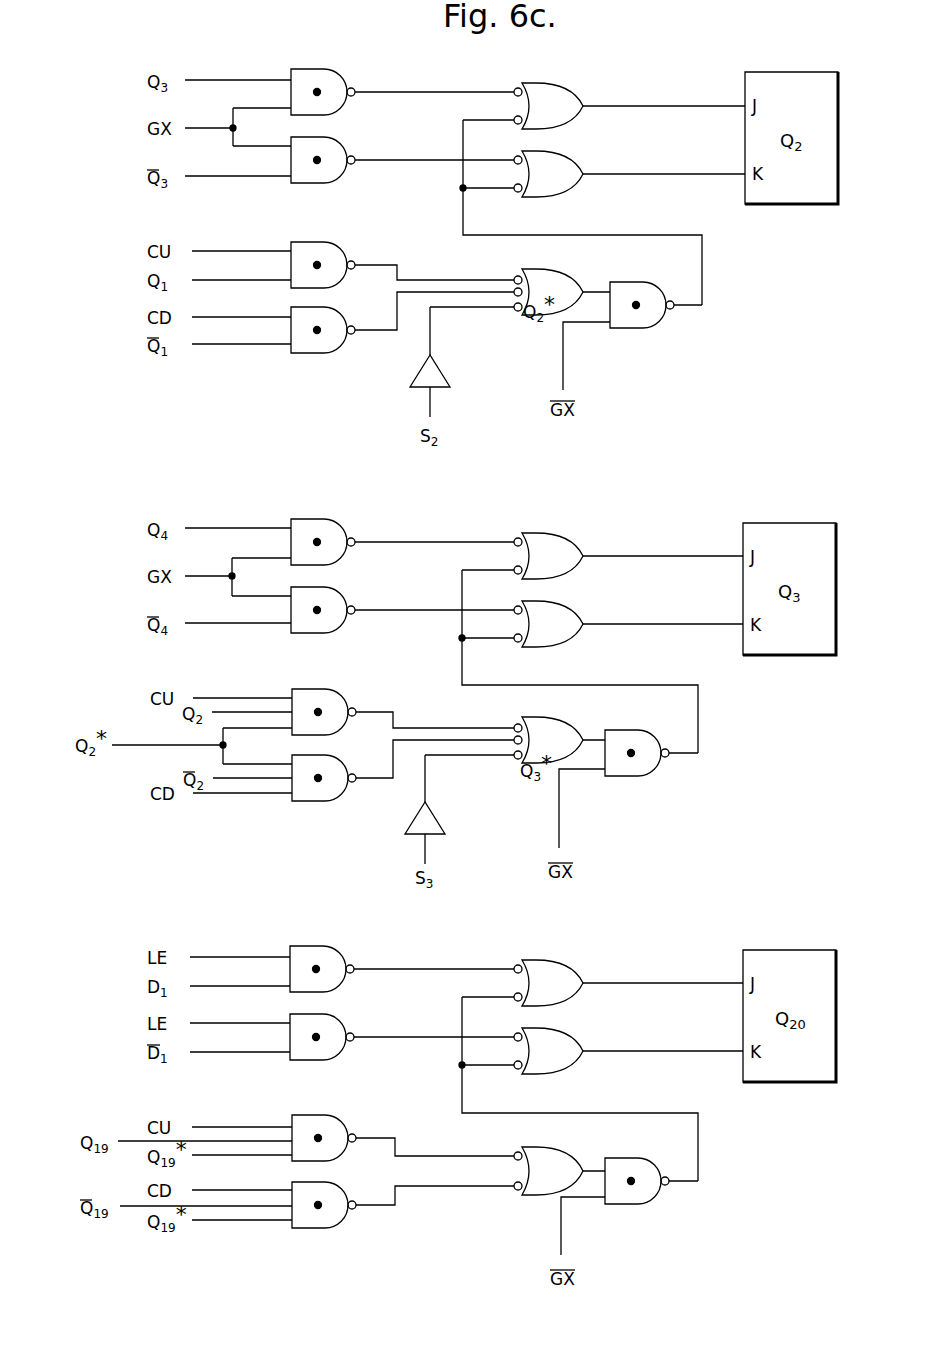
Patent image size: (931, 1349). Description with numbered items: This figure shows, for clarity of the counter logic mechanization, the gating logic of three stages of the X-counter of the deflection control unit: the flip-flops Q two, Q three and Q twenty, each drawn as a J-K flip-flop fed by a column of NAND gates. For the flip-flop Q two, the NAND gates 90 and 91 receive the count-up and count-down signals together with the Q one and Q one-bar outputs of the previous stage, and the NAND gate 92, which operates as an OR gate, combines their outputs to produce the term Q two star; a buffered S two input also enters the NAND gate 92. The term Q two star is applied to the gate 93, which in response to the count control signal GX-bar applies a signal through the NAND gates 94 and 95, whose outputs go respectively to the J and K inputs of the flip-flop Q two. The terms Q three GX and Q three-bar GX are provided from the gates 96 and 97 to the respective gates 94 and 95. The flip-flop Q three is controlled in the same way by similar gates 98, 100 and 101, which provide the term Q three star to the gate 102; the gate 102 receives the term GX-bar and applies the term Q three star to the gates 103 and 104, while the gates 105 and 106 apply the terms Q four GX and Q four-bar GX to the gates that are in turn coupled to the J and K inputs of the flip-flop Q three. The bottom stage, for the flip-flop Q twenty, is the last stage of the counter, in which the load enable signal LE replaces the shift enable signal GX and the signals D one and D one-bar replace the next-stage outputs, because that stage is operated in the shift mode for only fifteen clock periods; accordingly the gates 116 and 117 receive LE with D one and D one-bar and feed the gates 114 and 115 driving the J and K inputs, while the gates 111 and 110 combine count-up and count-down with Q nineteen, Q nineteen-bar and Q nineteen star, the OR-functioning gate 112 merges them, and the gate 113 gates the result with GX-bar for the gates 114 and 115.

The NAND gate 90 is at (330, 252).
The NAND gate 91 is at (330, 317).
The NAND gate operating as an OR gate 92 is at (500, 283).
The gate 93 is at (643, 320).
The NAND gate 94 is at (566, 97).
The NAND gate 95 is at (575, 166).
The gate 96 is at (333, 78).
The gate 97 is at (337, 147).
The gate 98 is at (329, 768).
The gate 100 is at (328, 698).
The gate 101 is at (502, 723).
The gate 102 is at (641, 770).
The gate 103 is at (555, 539).
The gate 104 is at (565, 615).
The gate 105 is at (327, 523).
The gate 106 is at (334, 597).
The NAND gate (CD, Q19-bar, Q19*) 110 is at (333, 1190).
The NAND gate (CU, Q19, Q19*) 111 is at (330, 1123).
The OR gate with inverting inputs 112 is at (503, 1153).
The NAND gate (GX-bar) 113 is at (644, 1197).
The OR gate with inverting inputs to J of Q20 114 is at (568, 973).
The OR gate with inverting inputs to K of Q20 115 is at (563, 1040).
The NAND gate (LE, D1) 116 is at (328, 953).
The NAND gate (LE, D1-bar) 117 is at (333, 1027).